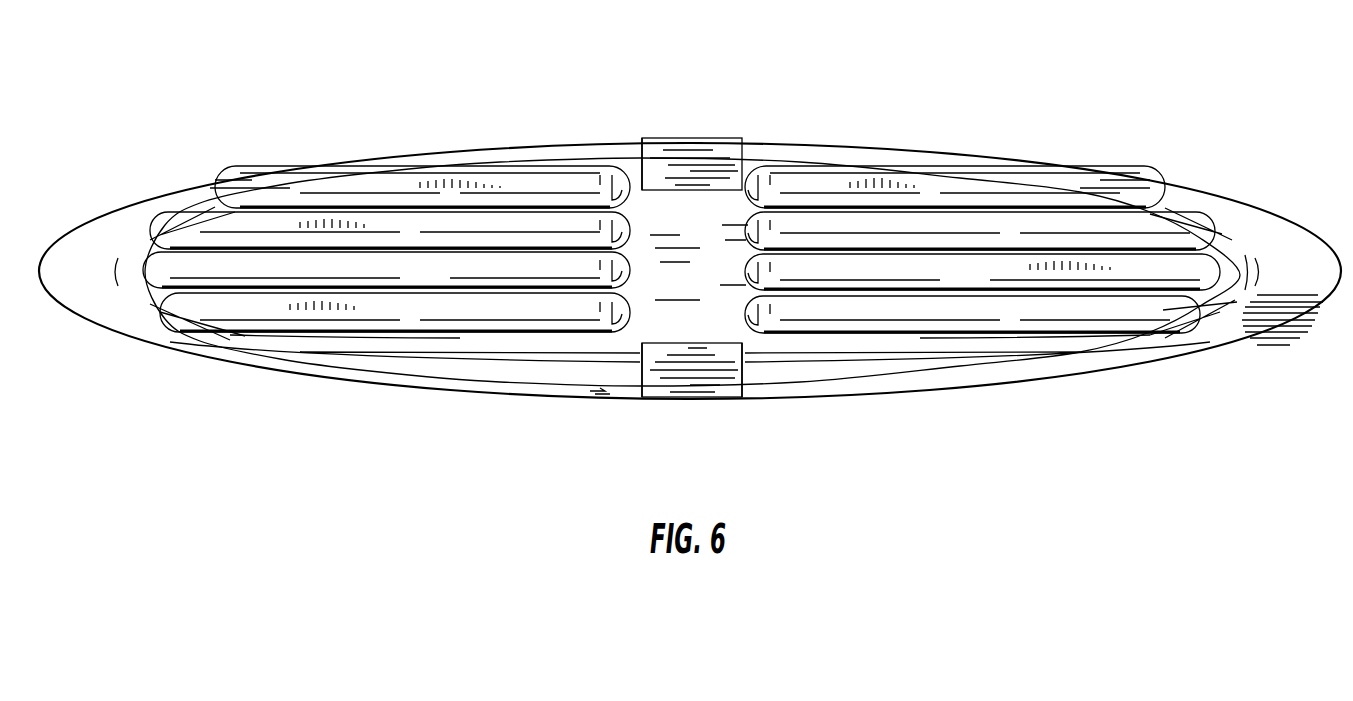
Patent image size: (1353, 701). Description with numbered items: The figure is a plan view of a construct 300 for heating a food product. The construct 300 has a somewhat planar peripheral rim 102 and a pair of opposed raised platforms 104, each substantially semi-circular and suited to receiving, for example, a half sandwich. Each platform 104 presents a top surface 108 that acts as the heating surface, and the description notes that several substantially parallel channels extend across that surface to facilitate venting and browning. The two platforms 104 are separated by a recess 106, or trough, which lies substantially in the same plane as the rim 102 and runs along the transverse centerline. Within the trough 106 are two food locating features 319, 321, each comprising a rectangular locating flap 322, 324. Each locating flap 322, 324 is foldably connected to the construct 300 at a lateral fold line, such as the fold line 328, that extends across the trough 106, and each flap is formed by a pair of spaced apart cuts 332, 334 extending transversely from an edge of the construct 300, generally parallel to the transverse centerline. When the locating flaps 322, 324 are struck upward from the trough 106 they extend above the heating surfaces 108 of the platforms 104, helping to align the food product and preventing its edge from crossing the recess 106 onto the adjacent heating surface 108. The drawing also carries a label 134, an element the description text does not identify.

The peripheral rim 102 is at (845, 390).
The platform 104 is at (412, 215).
The recess 106 is at (710, 298).
The top surface 108 is at (681, 270).
The base plate 134 is at (470, 388).
The construct 300 is at (922, 145).
The food locating feature 319 is at (746, 352).
The food locating feature 321 is at (638, 157).
The locating flap 322 is at (698, 373).
The locating flap 324 is at (692, 133).
The lateral fold line 328 is at (713, 187).
The cut 332 is at (633, 367).
The cut 334 is at (754, 369).